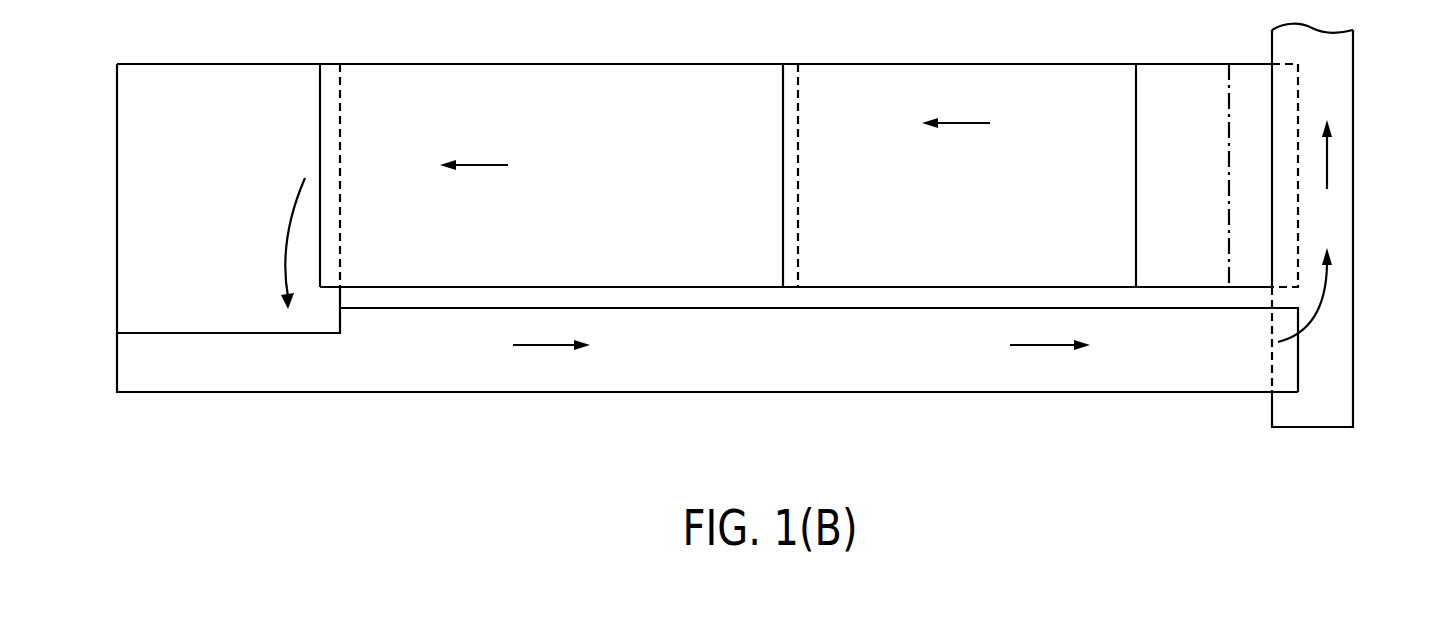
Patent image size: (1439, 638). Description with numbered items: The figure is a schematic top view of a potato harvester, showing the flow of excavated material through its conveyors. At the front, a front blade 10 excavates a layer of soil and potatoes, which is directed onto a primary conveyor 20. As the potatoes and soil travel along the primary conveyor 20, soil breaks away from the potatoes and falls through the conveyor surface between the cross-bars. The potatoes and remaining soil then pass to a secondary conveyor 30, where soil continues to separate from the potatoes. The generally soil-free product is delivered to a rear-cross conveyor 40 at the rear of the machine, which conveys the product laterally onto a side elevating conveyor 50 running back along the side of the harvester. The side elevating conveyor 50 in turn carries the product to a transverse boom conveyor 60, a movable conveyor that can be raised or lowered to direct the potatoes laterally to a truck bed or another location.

The first zone 10 is at (1165, 187).
The second zone 20 is at (940, 187).
The third zone 30 is at (553, 188).
The end chamber 40 is at (218, 188).
The return channel 50 is at (727, 363).
The outlet duct 60 is at (1353, 288).